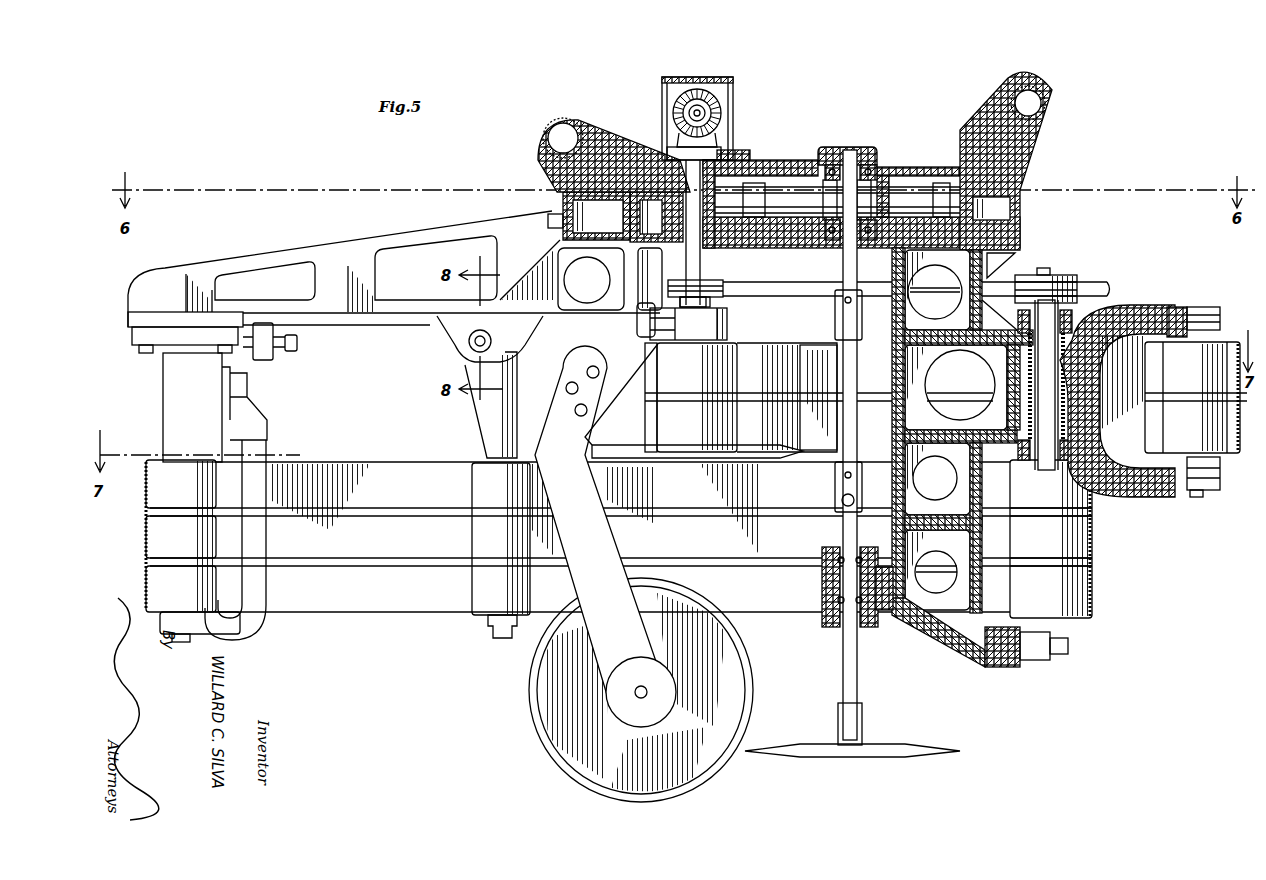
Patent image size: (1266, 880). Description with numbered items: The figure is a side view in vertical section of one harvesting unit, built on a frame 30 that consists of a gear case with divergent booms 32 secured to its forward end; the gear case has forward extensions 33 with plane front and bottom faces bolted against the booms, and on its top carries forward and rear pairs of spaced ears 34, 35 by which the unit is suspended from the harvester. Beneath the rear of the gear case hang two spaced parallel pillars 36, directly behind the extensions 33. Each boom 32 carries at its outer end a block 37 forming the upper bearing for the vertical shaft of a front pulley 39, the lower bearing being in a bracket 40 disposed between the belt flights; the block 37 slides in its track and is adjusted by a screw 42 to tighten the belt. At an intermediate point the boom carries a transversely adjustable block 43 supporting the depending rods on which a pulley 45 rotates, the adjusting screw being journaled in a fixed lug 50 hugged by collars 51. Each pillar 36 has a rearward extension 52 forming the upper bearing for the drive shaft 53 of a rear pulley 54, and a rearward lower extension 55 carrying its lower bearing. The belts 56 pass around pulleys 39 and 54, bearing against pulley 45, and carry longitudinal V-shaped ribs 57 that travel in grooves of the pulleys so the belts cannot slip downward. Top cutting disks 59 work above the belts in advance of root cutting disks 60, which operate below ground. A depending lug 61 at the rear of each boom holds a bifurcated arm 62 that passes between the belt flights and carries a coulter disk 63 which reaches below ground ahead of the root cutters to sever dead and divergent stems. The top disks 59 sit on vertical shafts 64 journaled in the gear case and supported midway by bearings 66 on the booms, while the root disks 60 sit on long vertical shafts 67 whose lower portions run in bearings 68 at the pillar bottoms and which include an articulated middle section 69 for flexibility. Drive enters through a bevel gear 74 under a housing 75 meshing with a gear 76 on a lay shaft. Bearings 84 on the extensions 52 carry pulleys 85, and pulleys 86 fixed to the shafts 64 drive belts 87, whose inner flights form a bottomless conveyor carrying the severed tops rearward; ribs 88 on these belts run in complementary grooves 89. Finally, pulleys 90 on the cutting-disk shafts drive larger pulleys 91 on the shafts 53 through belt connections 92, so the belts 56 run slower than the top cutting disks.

The frame 30 is at (542, 190).
The booms 32 is at (416, 234).
The forward extensions 33 is at (608, 192).
The forward pair of spaced ears 34 is at (587, 132).
The rear pair of spaced ears 35 is at (1038, 127).
The pillars 36 is at (898, 378).
The block 37 is at (175, 390).
The pulley 39 is at (168, 585).
The bracket 40 is at (260, 478).
The screw 42 is at (277, 348).
The block 43 is at (497, 418).
The pulley 45 is at (485, 607).
The fixed lug 50 is at (460, 335).
The collars 51 is at (473, 348).
The rearward extension 52 is at (1002, 338).
The drive shaft 53 is at (1060, 363).
The pulley 54 is at (1080, 552).
The rearward lower extension 55 is at (993, 663).
The belts 56 is at (357, 470).
The longitudinal ribs 57 is at (148, 510).
The top cutting disks 59 is at (597, 450).
The root cutting disks 60 is at (800, 751).
The depending lug 61 is at (610, 378).
The bifurcated arm 62 is at (605, 548).
The coulter disk 63 is at (732, 663).
The vertical shaft 64 is at (747, 170).
The bearings 66 is at (727, 323).
The vertical shafts 67 is at (873, 173).
The bearing 68 is at (890, 603).
The articulated middle section 69 is at (850, 380).
The bevel gear 74 is at (710, 150).
The housing 75 is at (733, 110).
The gear 76 is at (732, 88).
The bearings 84 is at (1205, 312).
The pulleys 85 is at (1220, 353).
The pulleys 86 is at (717, 355).
The belts 87 is at (808, 357).
The longitudinal ribs 88 is at (762, 397).
The grooves 89 is at (683, 397).
The pulleys 90 is at (703, 285).
The larger pulleys 91 is at (1075, 300).
The belt connections 92 is at (787, 287).